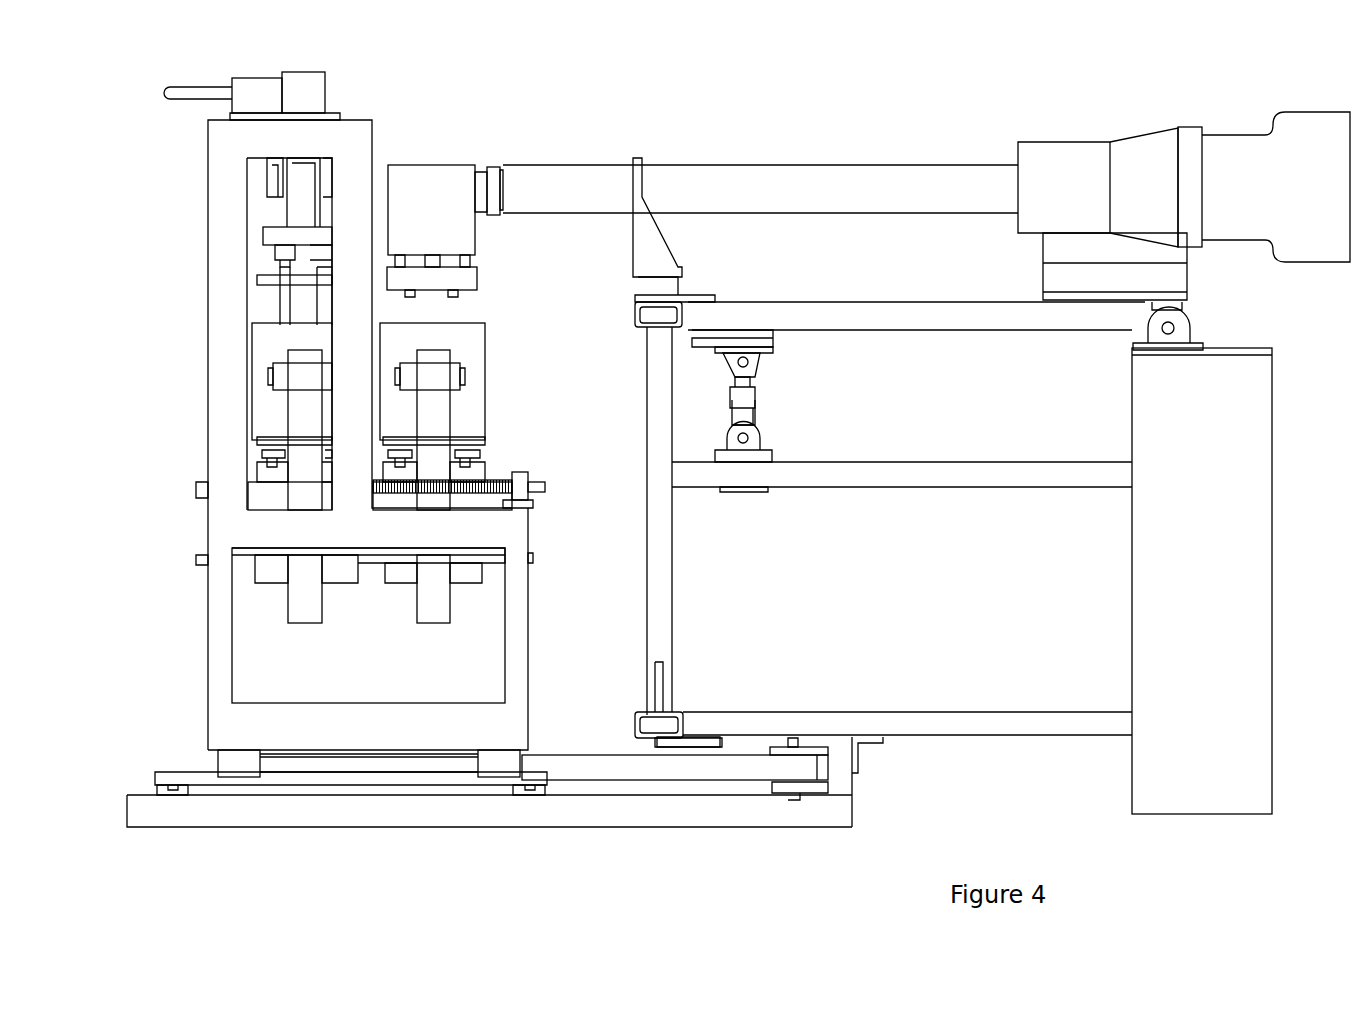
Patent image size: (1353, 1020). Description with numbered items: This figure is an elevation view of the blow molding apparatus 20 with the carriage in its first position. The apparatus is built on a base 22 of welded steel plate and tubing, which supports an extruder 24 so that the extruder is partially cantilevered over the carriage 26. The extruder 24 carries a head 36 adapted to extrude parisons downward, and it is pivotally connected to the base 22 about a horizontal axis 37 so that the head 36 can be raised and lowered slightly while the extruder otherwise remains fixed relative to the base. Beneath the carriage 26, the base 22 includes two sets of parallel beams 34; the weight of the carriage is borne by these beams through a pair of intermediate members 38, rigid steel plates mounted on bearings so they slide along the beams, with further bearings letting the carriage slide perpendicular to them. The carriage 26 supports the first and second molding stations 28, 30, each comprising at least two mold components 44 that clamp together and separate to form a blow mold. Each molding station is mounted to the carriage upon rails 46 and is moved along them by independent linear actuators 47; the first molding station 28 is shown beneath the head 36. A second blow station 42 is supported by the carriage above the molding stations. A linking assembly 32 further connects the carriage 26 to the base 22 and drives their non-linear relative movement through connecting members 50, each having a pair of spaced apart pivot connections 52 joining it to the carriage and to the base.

The blow molding apparatus 20 is at (697, 135).
The base 22 is at (395, 840).
The extruder 24 is at (790, 152).
The carriage 26 is at (198, 263).
The first molding station 28 is at (497, 390).
The second molding station 30 is at (240, 377).
The linking assembly 32 is at (628, 797).
The parallel beams 34 is at (172, 795).
The head 36 is at (423, 192).
The horizontal axis 37 is at (1190, 328).
The intermediate members 38 is at (417, 780).
The second blow station 42 is at (335, 93).
The mold components 44 is at (260, 337).
The rails 46 is at (243, 565).
The linear actuators 47 is at (492, 478).
The connecting members 50 is at (327, 767).
The pivot connections 52 is at (263, 757).